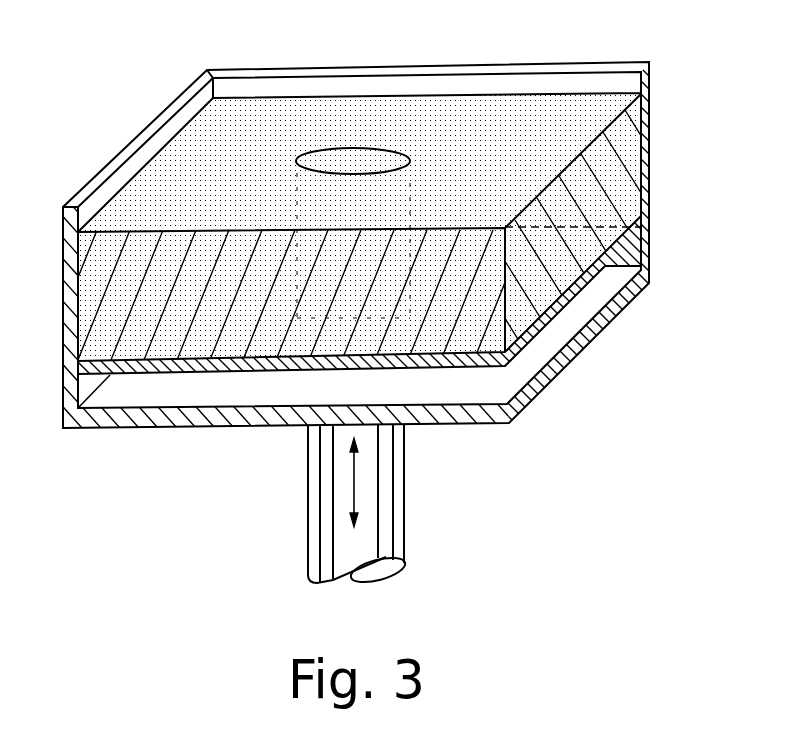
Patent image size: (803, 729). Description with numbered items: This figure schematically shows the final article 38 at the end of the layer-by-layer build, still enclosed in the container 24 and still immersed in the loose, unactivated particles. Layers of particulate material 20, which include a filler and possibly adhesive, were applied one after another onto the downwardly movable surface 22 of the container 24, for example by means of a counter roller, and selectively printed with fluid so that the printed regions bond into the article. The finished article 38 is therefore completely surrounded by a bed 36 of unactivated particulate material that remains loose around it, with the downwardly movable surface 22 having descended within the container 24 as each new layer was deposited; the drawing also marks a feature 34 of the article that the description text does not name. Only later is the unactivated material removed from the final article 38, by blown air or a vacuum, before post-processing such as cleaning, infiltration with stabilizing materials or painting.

The particulate material 20 is at (478, 116).
The downwardly movable surface 22 is at (580, 290).
The container 24 is at (650, 208).
The hole in block 34 is at (343, 148).
The bed of unactivated particulate material 36 is at (630, 152).
The final article 38 is at (410, 198).